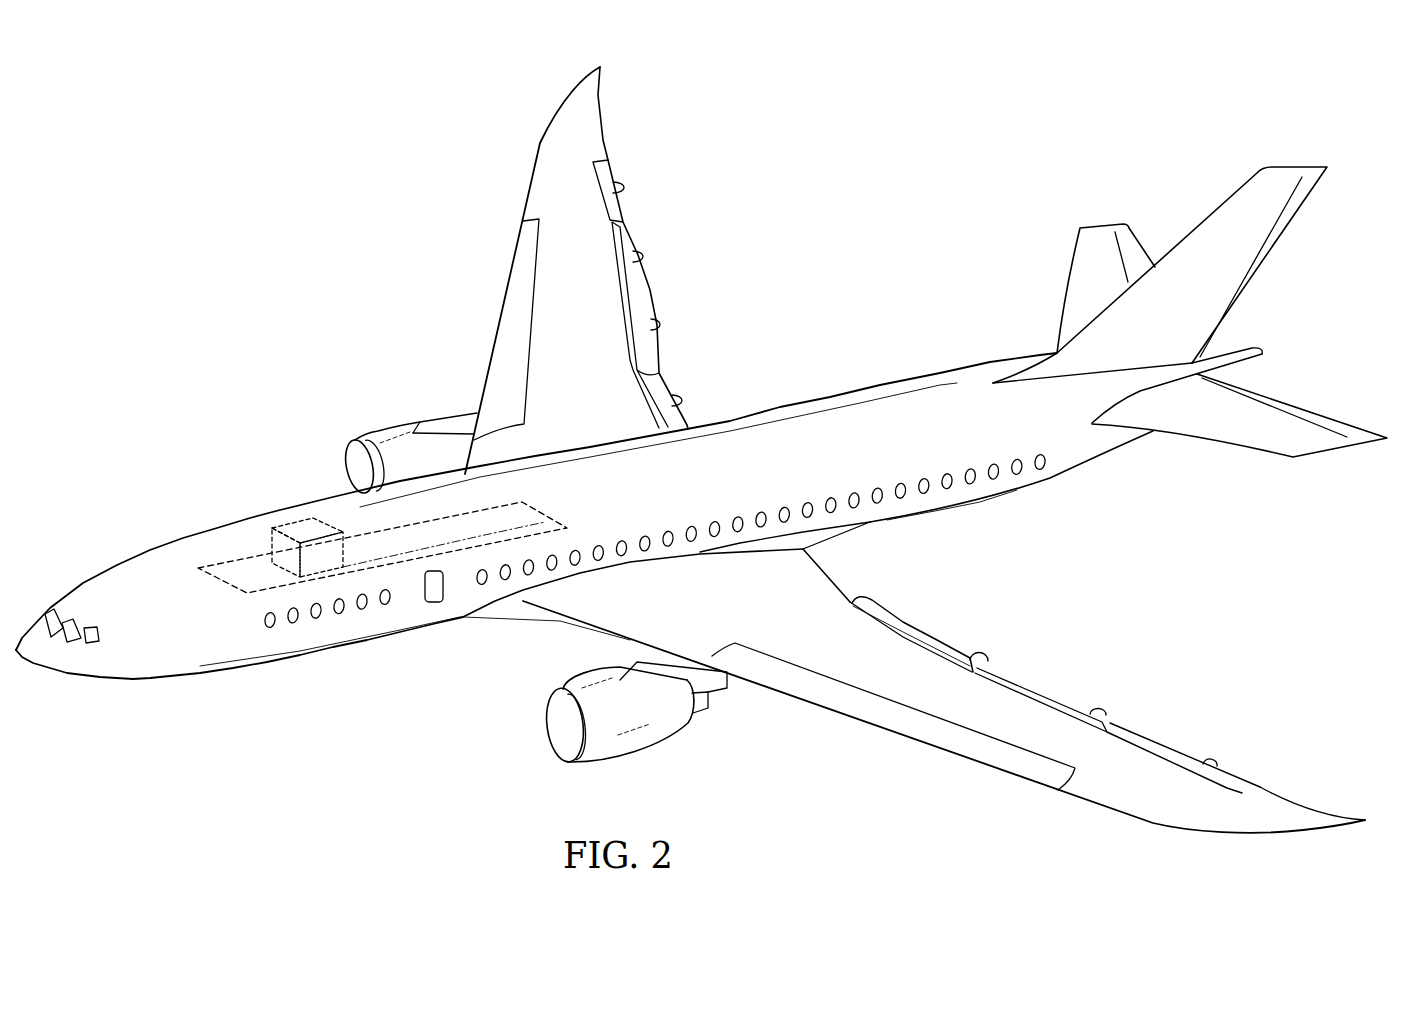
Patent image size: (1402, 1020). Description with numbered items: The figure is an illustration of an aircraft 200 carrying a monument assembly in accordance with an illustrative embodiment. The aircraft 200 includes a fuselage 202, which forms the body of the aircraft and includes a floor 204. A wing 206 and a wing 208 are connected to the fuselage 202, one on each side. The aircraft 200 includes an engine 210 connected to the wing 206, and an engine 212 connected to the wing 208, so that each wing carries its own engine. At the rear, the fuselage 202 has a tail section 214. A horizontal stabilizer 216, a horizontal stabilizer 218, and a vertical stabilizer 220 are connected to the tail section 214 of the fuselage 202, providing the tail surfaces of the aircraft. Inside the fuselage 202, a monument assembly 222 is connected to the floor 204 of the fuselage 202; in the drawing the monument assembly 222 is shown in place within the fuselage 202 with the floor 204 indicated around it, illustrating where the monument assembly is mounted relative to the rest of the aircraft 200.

The aircraft 200 is at (295, 217).
The fuselage 202 is at (164, 545).
The floor 204 is at (242, 560).
The wing 206 is at (1245, 834).
The wing 208 is at (533, 159).
The engine 210 is at (638, 752).
The engine 212 is at (390, 423).
The tail section 214 is at (1136, 495).
The horizontal stabilizer 216 is at (1242, 452).
The horizontal stabilizer 218 is at (1064, 288).
The vertical stabilizer 220 is at (1273, 250).
The monument assembly 222 is at (298, 520).